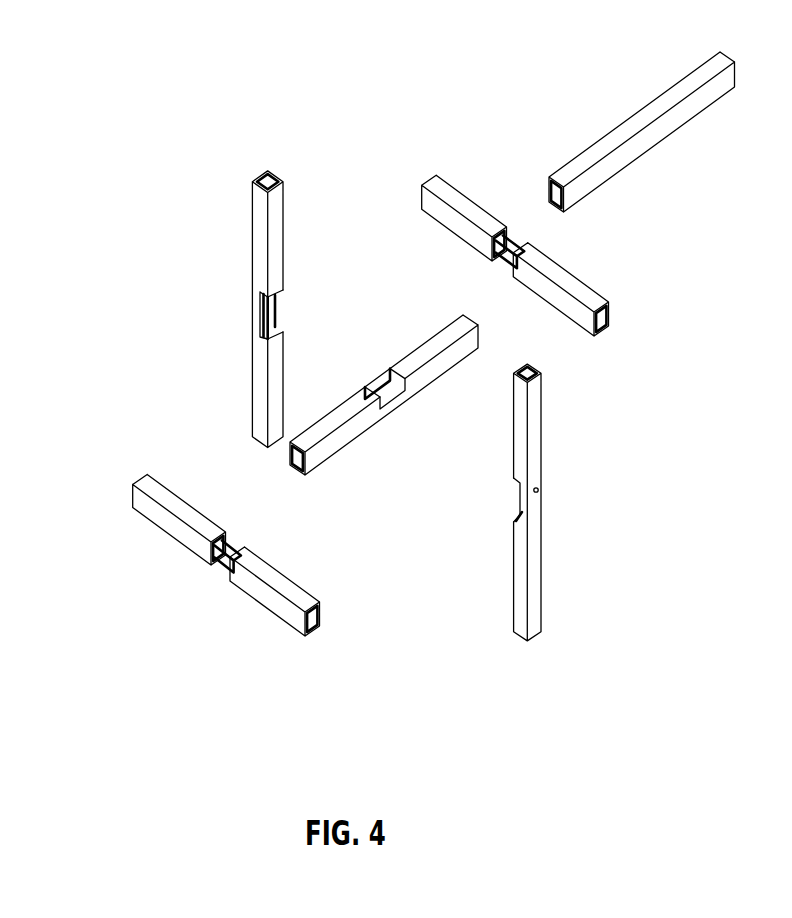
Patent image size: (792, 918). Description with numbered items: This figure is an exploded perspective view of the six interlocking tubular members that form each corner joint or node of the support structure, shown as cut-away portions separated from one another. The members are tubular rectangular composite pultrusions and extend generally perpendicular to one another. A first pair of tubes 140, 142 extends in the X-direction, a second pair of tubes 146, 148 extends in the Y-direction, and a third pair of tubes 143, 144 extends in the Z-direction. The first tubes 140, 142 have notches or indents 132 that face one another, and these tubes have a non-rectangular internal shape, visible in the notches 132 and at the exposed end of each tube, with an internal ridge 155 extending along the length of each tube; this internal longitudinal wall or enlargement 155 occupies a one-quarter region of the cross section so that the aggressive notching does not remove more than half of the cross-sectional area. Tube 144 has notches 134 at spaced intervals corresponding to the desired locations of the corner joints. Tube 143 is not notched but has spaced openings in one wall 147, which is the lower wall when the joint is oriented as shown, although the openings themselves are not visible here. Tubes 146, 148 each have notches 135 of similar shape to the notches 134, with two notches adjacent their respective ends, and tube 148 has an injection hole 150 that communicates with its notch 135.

The notch 132 is at (517, 275).
The notch 134 is at (380, 390).
The notch 135 is at (277, 315).
The first tube 140 is at (168, 497).
The first tube 142 is at (573, 283).
The third tube 143 is at (647, 115).
The third tube 144 is at (437, 343).
The second tube 146 is at (258, 223).
The wall 147 is at (549, 192).
The second tube 148 is at (535, 415).
The injection hole 150 is at (540, 492).
The internal ridge 155 is at (606, 323).